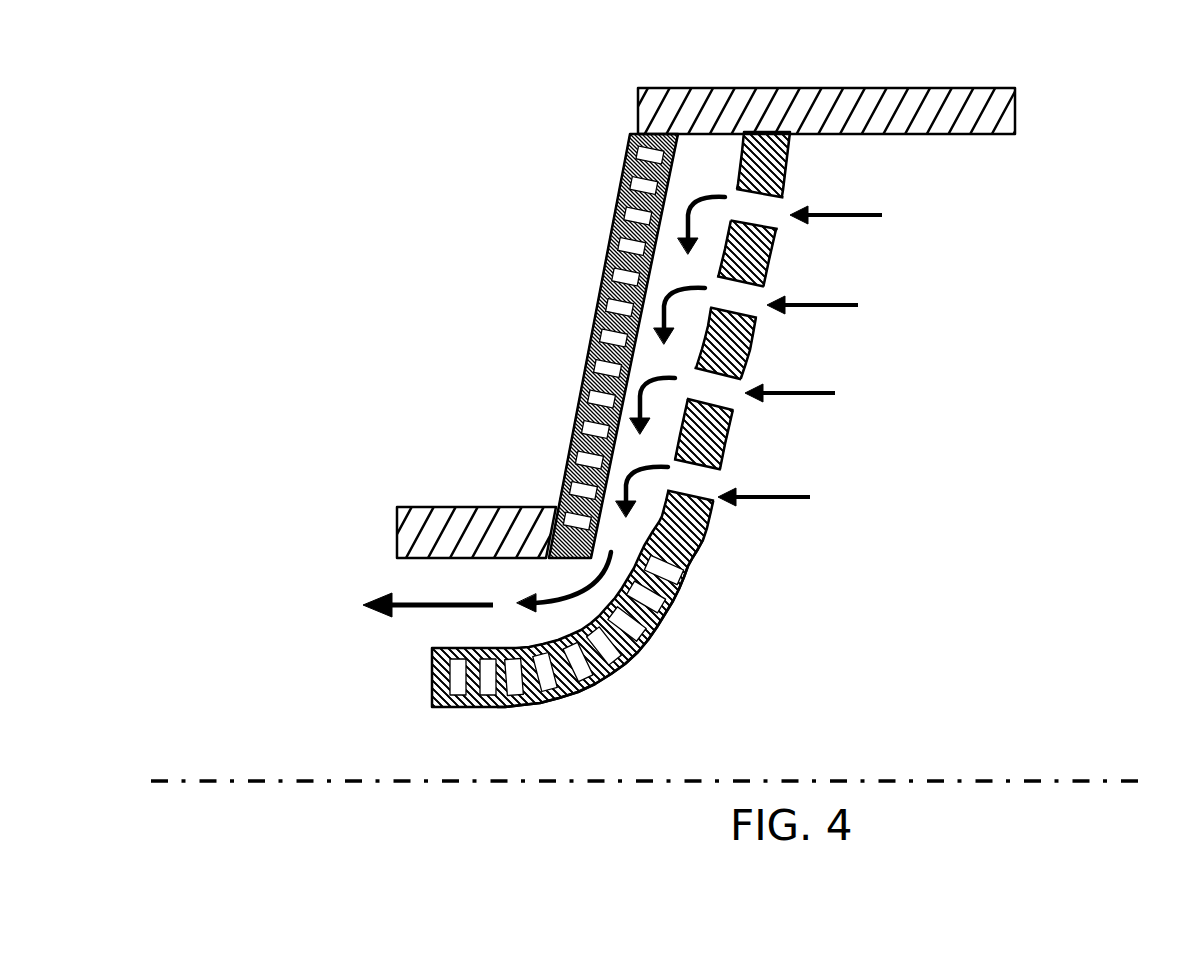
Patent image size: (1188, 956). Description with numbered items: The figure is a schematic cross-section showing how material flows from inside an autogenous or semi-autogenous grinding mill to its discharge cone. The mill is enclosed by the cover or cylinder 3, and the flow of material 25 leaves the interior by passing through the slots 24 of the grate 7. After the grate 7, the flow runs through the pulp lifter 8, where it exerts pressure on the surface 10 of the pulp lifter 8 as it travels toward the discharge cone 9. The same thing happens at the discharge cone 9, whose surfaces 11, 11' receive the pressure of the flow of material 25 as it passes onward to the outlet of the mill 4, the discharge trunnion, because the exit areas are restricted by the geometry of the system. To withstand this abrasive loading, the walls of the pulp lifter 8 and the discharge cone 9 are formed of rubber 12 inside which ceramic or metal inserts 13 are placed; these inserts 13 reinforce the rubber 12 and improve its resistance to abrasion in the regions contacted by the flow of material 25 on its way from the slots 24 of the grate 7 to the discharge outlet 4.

The cover or cylinder 3 is at (1015, 120).
The discharge outlet 4 is at (340, 602).
The grate 7 is at (748, 344).
The pulp lifter 8 is at (703, 185).
The discharge cone 9 is at (587, 577).
The surface 10 is at (773, 248).
The surface 11 is at (714, 623).
The surface 11' is at (464, 484).
The rubber 12 is at (588, 332).
The ceramic or metal inserts 13 is at (636, 187).
The slots 24 is at (710, 392).
The flow of material 25 is at (370, 603).